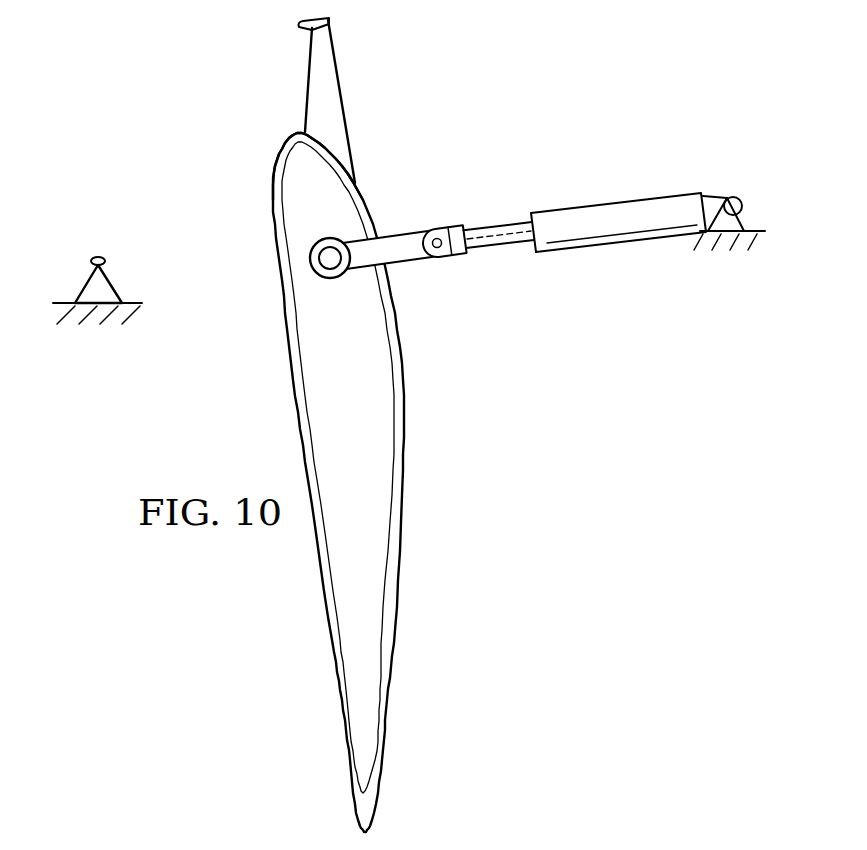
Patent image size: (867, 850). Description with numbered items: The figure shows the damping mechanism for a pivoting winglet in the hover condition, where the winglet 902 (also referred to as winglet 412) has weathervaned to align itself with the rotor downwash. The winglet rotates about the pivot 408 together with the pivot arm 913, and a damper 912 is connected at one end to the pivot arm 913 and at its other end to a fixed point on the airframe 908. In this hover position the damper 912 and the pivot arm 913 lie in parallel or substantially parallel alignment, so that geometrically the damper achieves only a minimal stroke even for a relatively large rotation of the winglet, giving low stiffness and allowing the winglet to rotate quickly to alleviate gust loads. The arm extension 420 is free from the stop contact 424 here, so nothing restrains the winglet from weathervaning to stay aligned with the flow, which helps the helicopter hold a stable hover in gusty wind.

The winglet 902 is at (384, 737).
The winglet 412 is at (288, 137).
The arm extension 420 is at (338, 80).
The pivot arm 913 is at (397, 235).
The pivot 408 is at (327, 257).
The damper 912 is at (616, 203).
The airframe 908 is at (743, 212).
The stop contact 424 is at (85, 286).